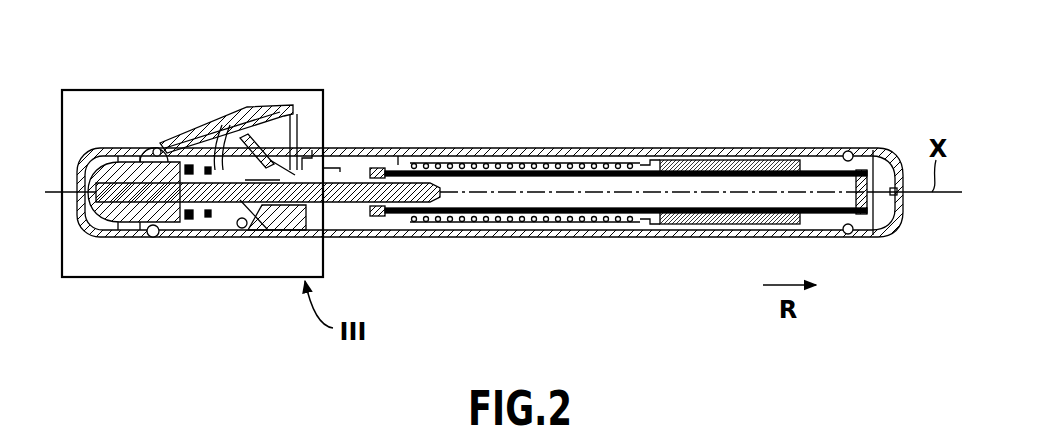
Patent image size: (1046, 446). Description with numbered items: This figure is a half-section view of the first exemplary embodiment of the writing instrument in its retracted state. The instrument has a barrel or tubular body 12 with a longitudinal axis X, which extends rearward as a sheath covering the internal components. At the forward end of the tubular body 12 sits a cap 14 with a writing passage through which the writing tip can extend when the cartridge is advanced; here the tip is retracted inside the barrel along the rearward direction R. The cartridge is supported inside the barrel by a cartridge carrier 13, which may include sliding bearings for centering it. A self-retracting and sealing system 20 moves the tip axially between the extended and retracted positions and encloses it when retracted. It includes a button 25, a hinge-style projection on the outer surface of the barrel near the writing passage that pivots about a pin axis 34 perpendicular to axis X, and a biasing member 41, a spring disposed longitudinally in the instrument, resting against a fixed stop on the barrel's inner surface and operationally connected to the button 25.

The tubular body 12 is at (665, 155).
The cartridge carrier 13 is at (387, 155).
The cap 14 is at (93, 150).
The self-retracting and sealing system 20 is at (228, 91).
The button 25 is at (190, 128).
The pin axis 34 is at (157, 148).
The biasing member 41 is at (507, 160).